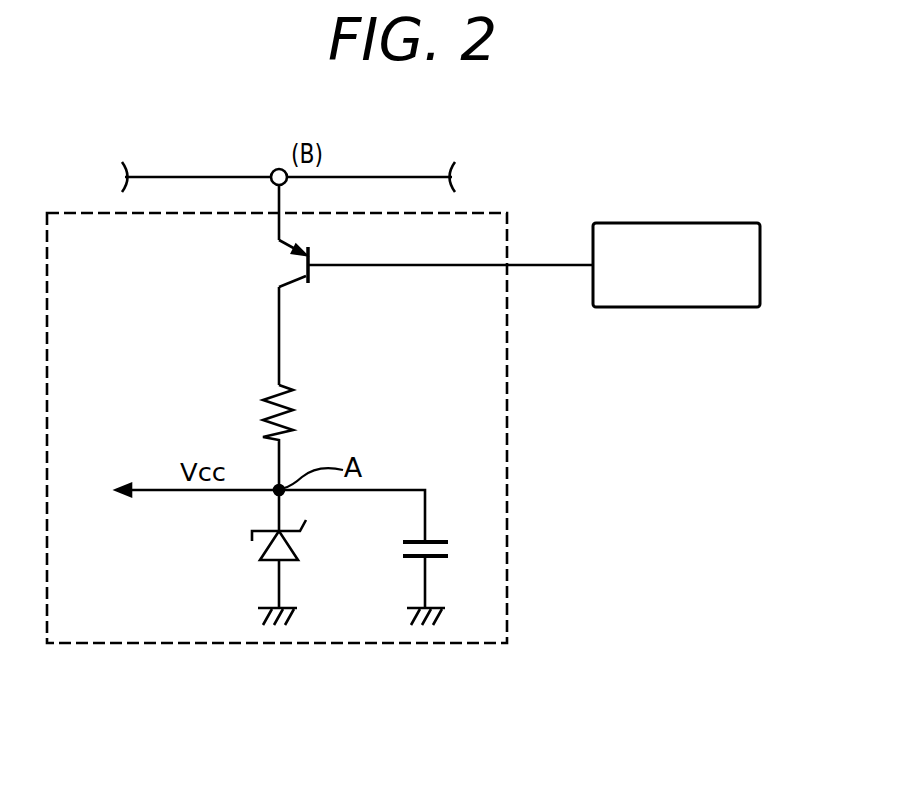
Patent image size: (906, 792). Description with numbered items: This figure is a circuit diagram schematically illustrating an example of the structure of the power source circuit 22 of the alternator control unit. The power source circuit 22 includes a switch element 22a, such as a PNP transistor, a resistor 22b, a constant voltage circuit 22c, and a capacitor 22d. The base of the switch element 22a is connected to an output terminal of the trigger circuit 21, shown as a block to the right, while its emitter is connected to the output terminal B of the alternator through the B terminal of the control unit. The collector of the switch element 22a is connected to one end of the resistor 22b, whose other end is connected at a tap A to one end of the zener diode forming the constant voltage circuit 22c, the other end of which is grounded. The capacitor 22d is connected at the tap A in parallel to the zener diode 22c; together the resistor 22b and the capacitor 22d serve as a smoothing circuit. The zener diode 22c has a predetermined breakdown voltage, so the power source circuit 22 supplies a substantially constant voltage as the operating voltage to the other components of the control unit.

The trigger circuit 21 is at (712, 223).
The power source circuit 22 is at (422, 645).
The switch element 22a is at (326, 292).
The resistor 22b is at (292, 410).
The constant voltage circuit 22c is at (246, 556).
The capacitor 22d is at (442, 536).